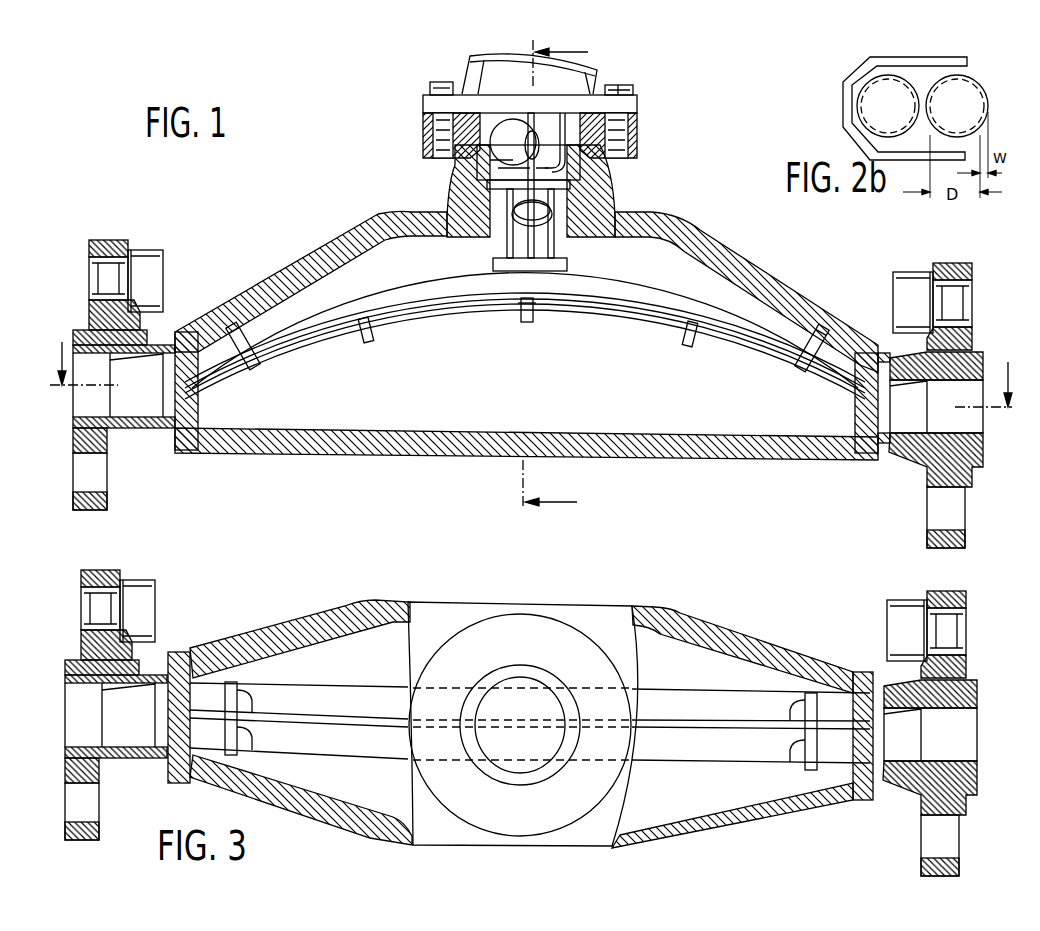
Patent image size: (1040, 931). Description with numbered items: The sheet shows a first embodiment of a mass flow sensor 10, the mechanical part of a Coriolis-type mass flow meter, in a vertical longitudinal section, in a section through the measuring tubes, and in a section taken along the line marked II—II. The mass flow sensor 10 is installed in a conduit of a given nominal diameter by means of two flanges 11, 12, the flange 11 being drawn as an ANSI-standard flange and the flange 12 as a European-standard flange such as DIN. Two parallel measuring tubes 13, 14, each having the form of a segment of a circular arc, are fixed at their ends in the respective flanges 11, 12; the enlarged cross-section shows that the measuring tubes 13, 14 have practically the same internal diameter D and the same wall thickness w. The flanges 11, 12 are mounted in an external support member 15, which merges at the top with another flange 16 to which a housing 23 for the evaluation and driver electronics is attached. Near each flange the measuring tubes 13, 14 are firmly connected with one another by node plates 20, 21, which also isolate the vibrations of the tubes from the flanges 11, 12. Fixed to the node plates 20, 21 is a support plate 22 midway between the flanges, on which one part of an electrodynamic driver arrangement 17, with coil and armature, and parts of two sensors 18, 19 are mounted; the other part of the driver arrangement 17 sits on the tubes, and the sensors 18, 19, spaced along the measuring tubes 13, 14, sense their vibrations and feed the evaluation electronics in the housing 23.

In FIG. 1, the mass flow sensor 10 is at (311, 146).
In FIG. 1, the flange 11 is at (112, 244).
In FIG. 3, the flange 11 is at (105, 572).
In FIG. 1, the flange 12 is at (953, 263).
In FIG. 3, the flange 12 is at (955, 587).
In FIG. 3, the measuring tube 13 is at (708, 703).
In FIG. 1, the measuring tube 14 is at (631, 292).
In FIG. 3, the measuring tube 14 is at (752, 742).
In FIG. 1, the support member 15 is at (728, 268).
In FIG. 3, the support member 15 is at (658, 608).
In FIG. 1, the flange 16 is at (638, 148).
In FIG. 1, the electrodynamic driver arrangement 17 is at (534, 322).
In FIG. 1, the sensor 18 is at (367, 334).
In FIG. 1, the sensor 19 is at (690, 347).
In FIG. 1, the node plate 20 is at (240, 326).
In FIG. 3, the node plate 20 is at (228, 682).
In FIG. 1, the node plate 21 is at (815, 348).
In FIG. 3, the node plate 21 is at (813, 698).
In FIG. 1, the support plate 22 is at (454, 323).
In FIG. 1, the housing 23 is at (468, 63).